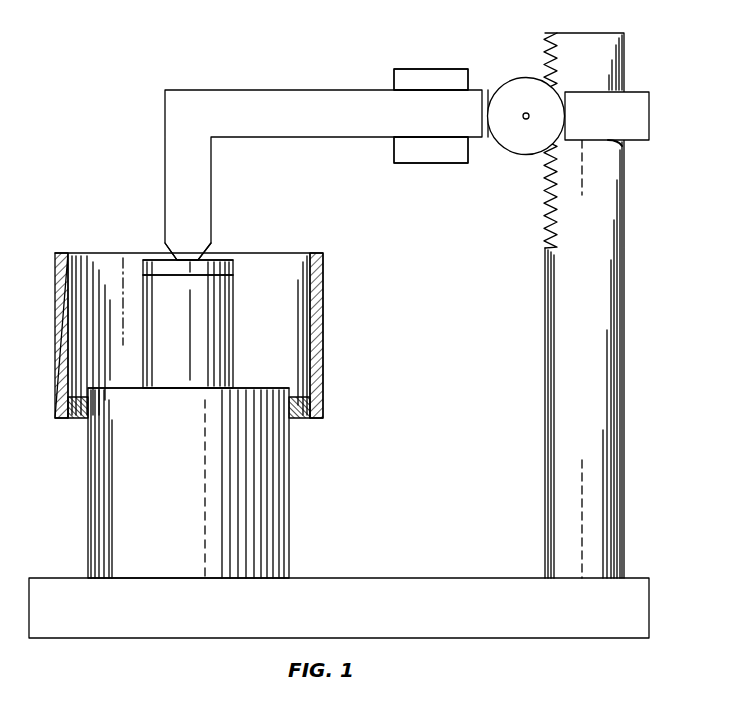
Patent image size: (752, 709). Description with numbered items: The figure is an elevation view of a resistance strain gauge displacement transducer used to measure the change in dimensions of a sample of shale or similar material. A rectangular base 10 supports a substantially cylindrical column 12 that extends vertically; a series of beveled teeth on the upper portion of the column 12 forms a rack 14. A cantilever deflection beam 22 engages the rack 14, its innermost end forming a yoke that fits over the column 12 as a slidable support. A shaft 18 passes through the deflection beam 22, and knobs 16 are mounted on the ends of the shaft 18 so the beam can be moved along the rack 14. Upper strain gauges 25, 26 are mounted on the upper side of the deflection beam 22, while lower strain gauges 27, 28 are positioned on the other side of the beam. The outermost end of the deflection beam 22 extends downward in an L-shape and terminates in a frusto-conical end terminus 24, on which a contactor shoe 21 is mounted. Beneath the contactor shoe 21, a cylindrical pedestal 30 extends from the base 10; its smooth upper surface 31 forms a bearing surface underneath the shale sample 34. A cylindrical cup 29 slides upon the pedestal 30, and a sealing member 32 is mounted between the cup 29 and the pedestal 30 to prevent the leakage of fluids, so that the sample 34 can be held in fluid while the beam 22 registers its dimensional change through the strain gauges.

The rectangular base 10 is at (406, 577).
The cylindrical column 12 is at (545, 487).
The rack 14 is at (545, 236).
The knobs 16 is at (520, 78).
The shaft 18 is at (525, 121).
The contactor shoe 21 is at (216, 262).
The cantilever deflection beam 22 is at (218, 90).
The frusto-conical end terminus 24 is at (165, 248).
The upper strain gauge 25 is at (448, 68).
The upper strain gauge 26 is at (448, 68).
The lower strain gauge 27 is at (452, 164).
The lower strain gauge 28 is at (452, 164).
The cylindrical cup 29 is at (323, 320).
The cylindrical pedestal 30 is at (88, 489).
The upper surface 31 is at (276, 388).
The sealing member 32 is at (78, 418).
The shale sample 34 is at (233, 303).